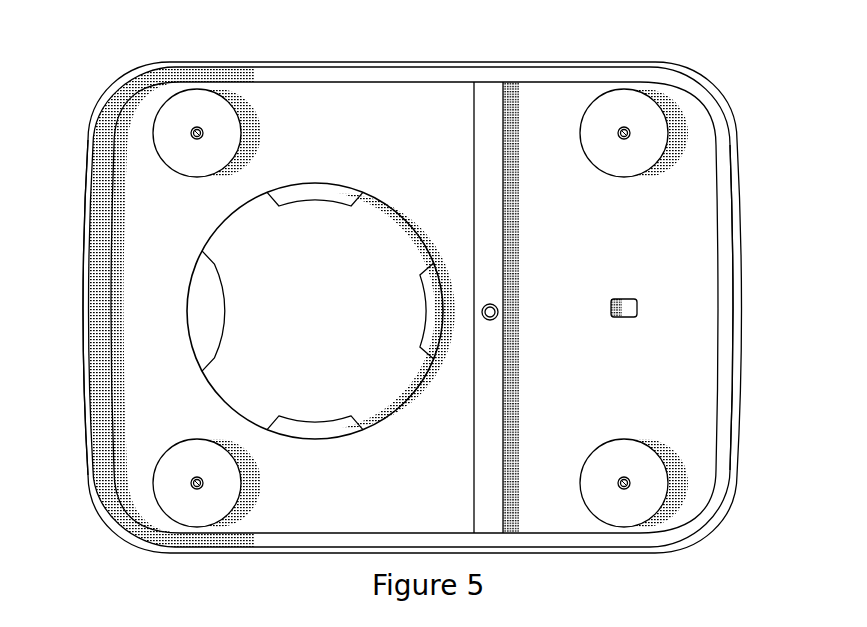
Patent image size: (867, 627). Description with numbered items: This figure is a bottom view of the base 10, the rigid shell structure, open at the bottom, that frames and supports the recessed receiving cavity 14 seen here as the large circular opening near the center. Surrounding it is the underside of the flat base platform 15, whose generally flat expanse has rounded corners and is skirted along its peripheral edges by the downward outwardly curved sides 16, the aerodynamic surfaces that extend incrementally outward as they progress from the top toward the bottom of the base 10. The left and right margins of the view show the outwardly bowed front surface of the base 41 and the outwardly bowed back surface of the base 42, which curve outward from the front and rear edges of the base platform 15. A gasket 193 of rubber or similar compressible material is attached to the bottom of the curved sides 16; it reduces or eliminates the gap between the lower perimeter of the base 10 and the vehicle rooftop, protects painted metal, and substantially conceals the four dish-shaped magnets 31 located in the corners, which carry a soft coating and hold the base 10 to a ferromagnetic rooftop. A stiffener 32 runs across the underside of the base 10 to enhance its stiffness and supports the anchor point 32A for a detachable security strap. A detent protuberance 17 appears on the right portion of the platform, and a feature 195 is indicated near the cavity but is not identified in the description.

The base 10 is at (108, 122).
The recessed receiving cavity 14 is at (313, 340).
The flat base platform 15 is at (633, 225).
The downward outwardly curved sides 16 is at (557, 77).
The detent protuberance 17 is at (640, 314).
The dish-shaped magnets 31 is at (190, 137).
The stiffener 32 is at (493, 226).
The anchor point 32A is at (503, 315).
The outwardly bowed front surface of the base 41 is at (85, 278).
The outwardly bowed back surface of the base 42 is at (718, 297).
The gasket 193 is at (97, 445).
The tabs 195 is at (403, 431).